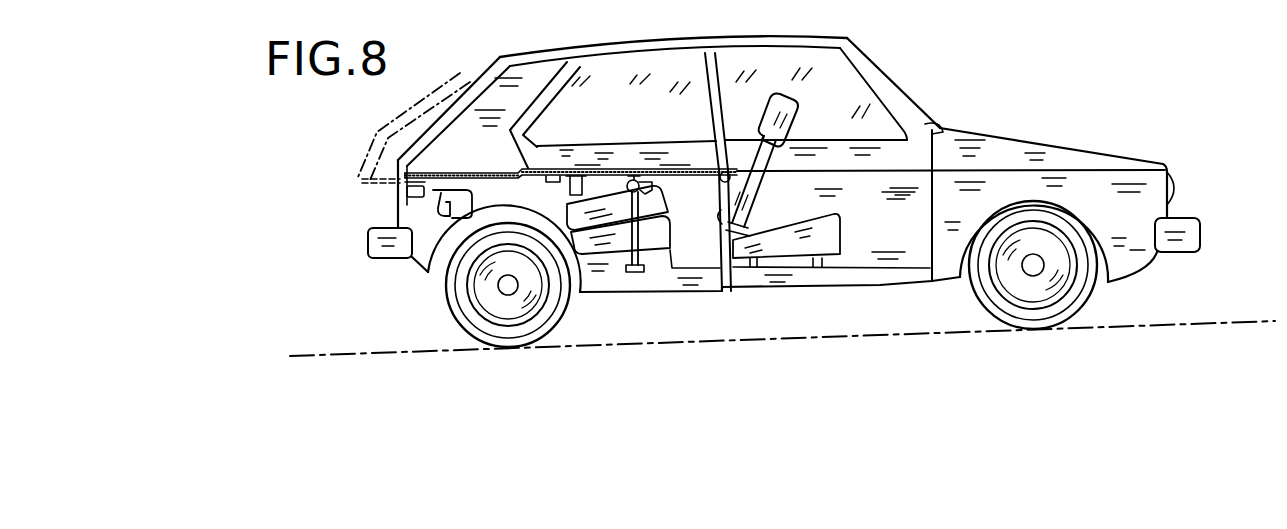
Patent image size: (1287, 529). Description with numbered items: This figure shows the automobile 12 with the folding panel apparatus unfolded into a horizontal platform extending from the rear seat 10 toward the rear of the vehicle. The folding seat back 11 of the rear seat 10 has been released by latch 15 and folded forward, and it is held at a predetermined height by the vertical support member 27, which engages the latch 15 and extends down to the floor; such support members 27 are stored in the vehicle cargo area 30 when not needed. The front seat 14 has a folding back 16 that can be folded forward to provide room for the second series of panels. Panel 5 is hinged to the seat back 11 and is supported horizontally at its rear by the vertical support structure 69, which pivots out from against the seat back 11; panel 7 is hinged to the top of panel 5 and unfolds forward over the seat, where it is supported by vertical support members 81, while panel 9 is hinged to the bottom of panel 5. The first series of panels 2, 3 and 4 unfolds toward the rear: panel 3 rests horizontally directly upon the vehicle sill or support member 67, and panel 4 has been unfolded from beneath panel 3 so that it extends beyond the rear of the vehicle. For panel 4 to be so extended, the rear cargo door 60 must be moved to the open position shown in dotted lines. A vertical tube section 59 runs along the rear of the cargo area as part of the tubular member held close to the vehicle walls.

The automobile 12 is at (907, 83).
The rear cargo door 60 is at (447, 89).
The panel 4 is at (365, 183).
The panel 2 is at (482, 172).
The panel 3 is at (433, 180).
The support member 67 is at (407, 193).
The vehicle cargo area 30 is at (418, 228).
The vertical portion of tube 59 is at (452, 220).
The vertical support structure 69 is at (570, 190).
The panel 9 is at (551, 168).
The panel 5 is at (588, 169).
The panel 7 is at (677, 168).
The latch 15 is at (630, 169).
The vertical support member 27 is at (641, 254).
The seat back 11 is at (650, 203).
The rear seat 10 is at (660, 233).
The vertical support members 81 is at (730, 202).
The folding back 16 is at (788, 110).
The front seat 14 is at (840, 230).